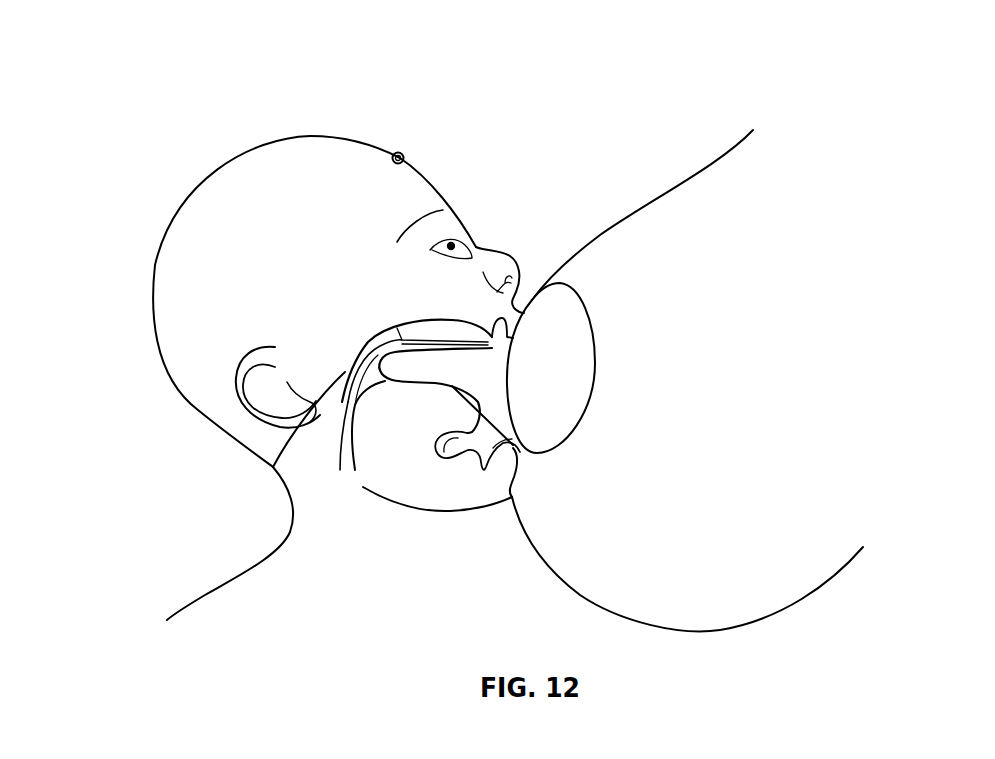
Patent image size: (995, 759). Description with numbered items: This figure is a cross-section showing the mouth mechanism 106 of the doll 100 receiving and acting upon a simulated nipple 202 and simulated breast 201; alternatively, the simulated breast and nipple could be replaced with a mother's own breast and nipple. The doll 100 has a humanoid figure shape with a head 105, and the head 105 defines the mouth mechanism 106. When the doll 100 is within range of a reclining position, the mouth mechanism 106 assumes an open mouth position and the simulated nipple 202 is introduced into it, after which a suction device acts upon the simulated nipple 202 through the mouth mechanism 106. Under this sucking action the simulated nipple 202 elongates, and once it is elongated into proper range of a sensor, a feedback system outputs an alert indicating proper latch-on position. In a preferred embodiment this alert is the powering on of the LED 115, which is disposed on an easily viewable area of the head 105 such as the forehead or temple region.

The doll 100 is at (172, 96).
The head 105 is at (250, 213).
The mouth mechanism 106 is at (272, 468).
The light emitting diode (LED) 115 is at (395, 153).
The simulated breast 201 is at (770, 479).
The simulated nipple 202 is at (497, 375).